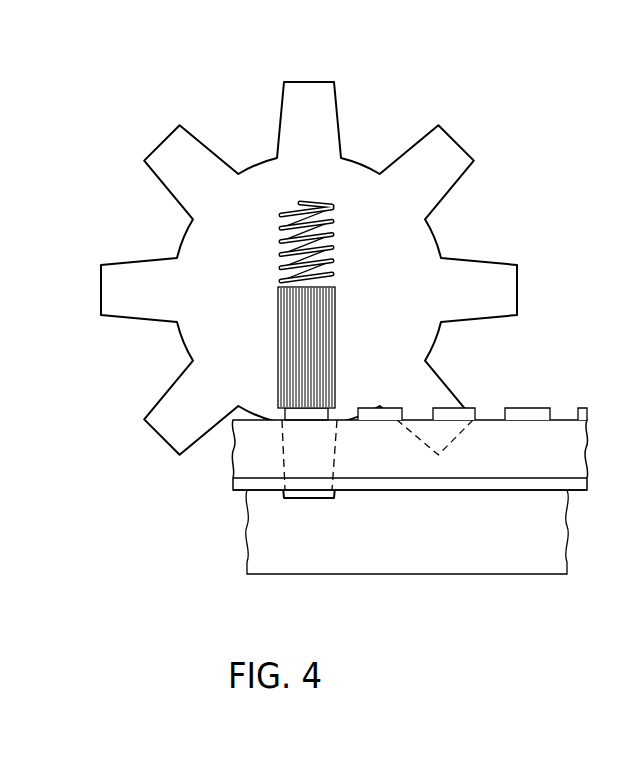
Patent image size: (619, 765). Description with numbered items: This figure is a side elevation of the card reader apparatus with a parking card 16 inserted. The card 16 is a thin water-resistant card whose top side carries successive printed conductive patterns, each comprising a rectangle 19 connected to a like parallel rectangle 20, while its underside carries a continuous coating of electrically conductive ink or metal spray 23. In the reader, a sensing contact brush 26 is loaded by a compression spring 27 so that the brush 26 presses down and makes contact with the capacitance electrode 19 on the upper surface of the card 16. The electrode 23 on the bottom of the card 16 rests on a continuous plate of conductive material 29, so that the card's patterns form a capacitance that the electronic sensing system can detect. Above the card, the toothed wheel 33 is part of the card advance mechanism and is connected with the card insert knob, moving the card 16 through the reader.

The toothed wheel 33 is at (384, 116).
The compression spring 27 is at (334, 208).
The sensing contact brush 26 is at (333, 320).
The rectangle 19 is at (280, 408).
The parallel rectangle 20 is at (388, 408).
The parking card 16 is at (248, 450).
The conductive coating 23 is at (237, 490).
The conductive plate 29 is at (258, 550).